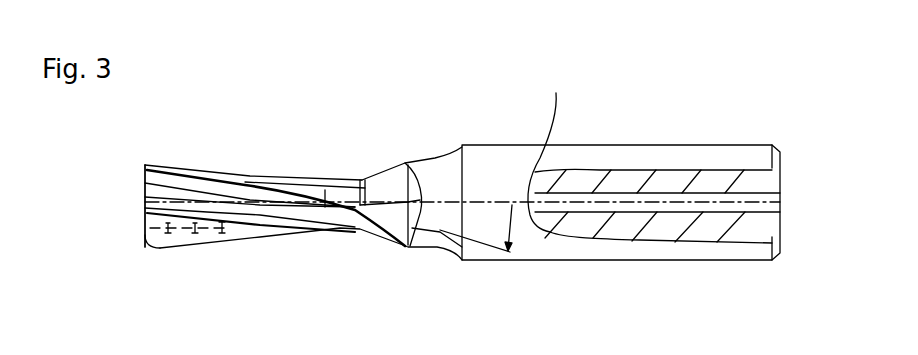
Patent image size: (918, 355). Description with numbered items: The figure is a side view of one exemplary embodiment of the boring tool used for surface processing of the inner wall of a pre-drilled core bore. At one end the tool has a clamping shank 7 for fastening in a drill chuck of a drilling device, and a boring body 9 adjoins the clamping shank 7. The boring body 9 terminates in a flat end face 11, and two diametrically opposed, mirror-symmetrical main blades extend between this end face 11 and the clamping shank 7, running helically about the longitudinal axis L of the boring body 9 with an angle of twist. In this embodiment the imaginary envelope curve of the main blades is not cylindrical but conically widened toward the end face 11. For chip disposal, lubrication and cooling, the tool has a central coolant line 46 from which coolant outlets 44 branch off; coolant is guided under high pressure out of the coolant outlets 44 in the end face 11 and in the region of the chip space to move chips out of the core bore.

The clamping shank 7 is at (667, 143).
The boring body 9 is at (257, 170).
The end face 11 is at (143, 201).
The coolant outlets 44 is at (165, 234).
The central coolant line 46 is at (679, 243).
The longitudinal axis L is at (546, 147).